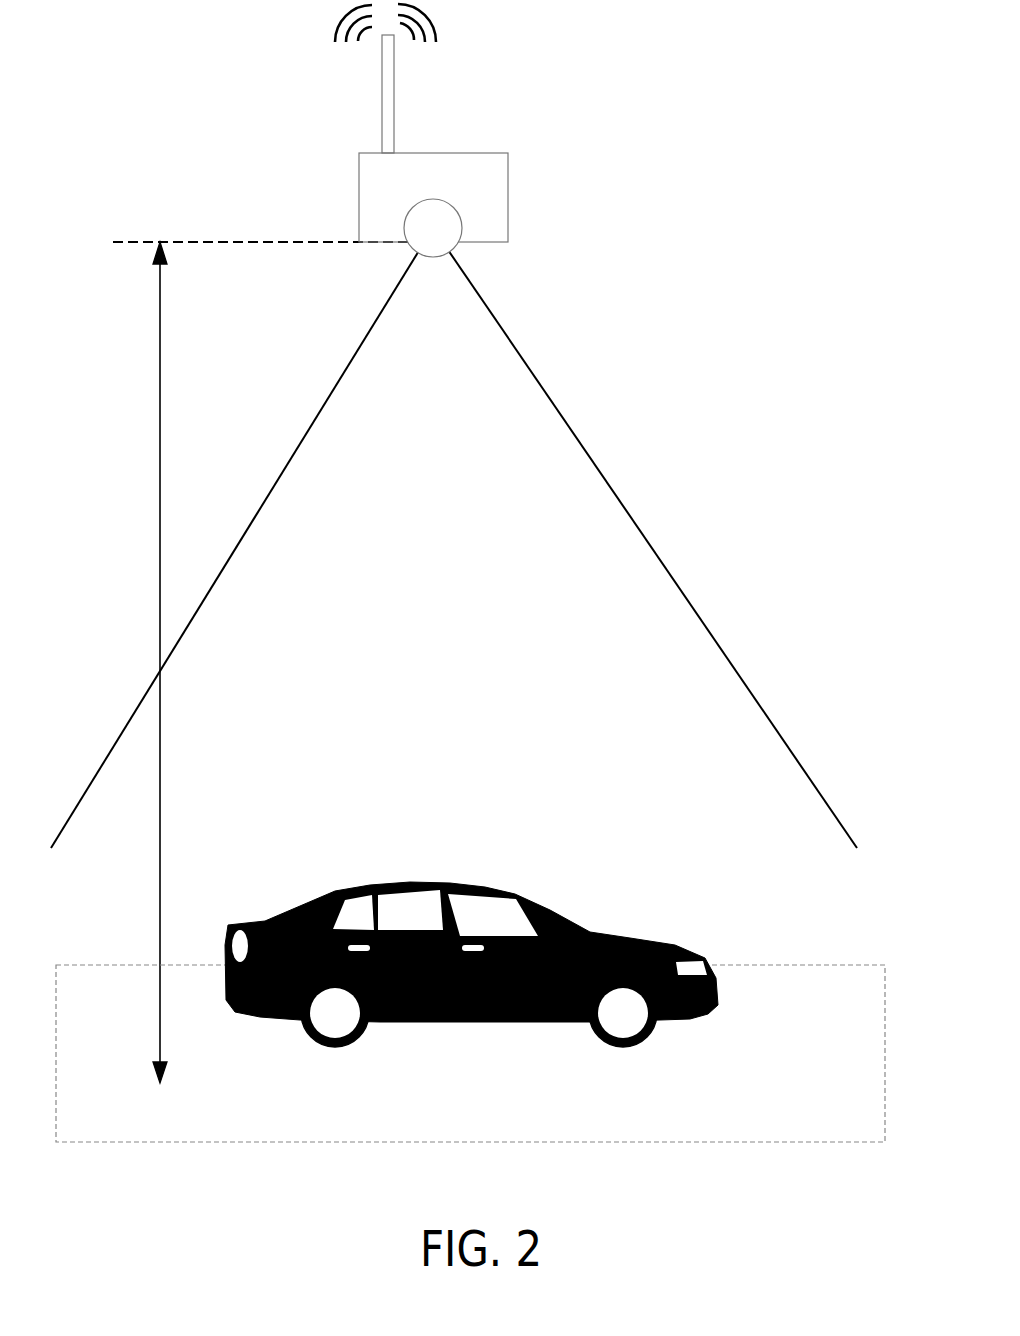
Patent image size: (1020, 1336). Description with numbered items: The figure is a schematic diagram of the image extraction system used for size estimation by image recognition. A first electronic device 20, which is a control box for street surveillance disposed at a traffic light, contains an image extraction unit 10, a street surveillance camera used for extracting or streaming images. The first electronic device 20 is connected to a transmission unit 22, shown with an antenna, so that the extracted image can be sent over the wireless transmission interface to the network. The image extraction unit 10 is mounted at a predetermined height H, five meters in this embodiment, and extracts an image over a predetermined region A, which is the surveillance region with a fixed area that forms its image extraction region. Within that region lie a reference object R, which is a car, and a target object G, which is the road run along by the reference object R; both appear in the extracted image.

The image extraction unit 10 is at (433, 198).
The first electronic device 20 is at (507, 197).
The transmission unit 22 is at (394, 95).
The predetermined height H is at (160, 440).
The predetermined region A is at (679, 684).
The reference object R is at (442, 885).
The target object G is at (780, 993).